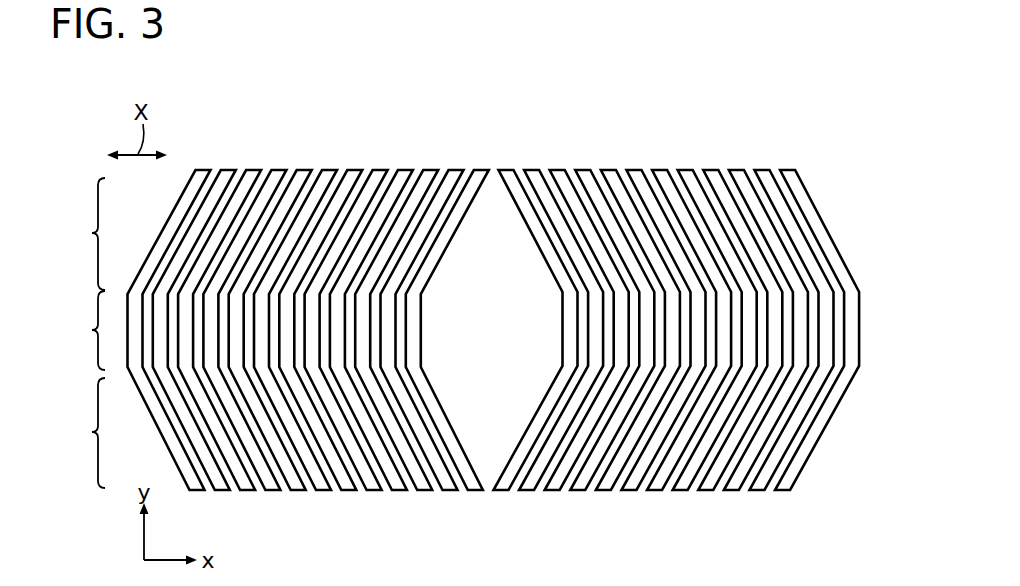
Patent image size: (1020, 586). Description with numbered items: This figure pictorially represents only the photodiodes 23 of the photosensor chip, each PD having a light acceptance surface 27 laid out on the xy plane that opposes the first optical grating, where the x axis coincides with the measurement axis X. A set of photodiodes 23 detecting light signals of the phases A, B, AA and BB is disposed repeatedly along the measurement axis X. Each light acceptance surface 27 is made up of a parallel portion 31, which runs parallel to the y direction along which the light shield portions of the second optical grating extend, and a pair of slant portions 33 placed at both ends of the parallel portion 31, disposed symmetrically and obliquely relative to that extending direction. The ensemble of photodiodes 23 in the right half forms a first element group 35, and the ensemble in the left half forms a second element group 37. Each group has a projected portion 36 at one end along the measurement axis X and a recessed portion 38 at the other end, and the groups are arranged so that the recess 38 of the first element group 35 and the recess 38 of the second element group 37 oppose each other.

The photodiode 23 is at (210, 162).
The light acceptance surface 27 is at (177, 207).
The parallel portion 31 is at (83, 330).
The slant portion 33 is at (83, 333).
The first element group 35 is at (531, 295).
The projected portion 36 is at (126, 341).
The second element group 37 is at (363, 327).
The recessed portion 38 is at (423, 349).